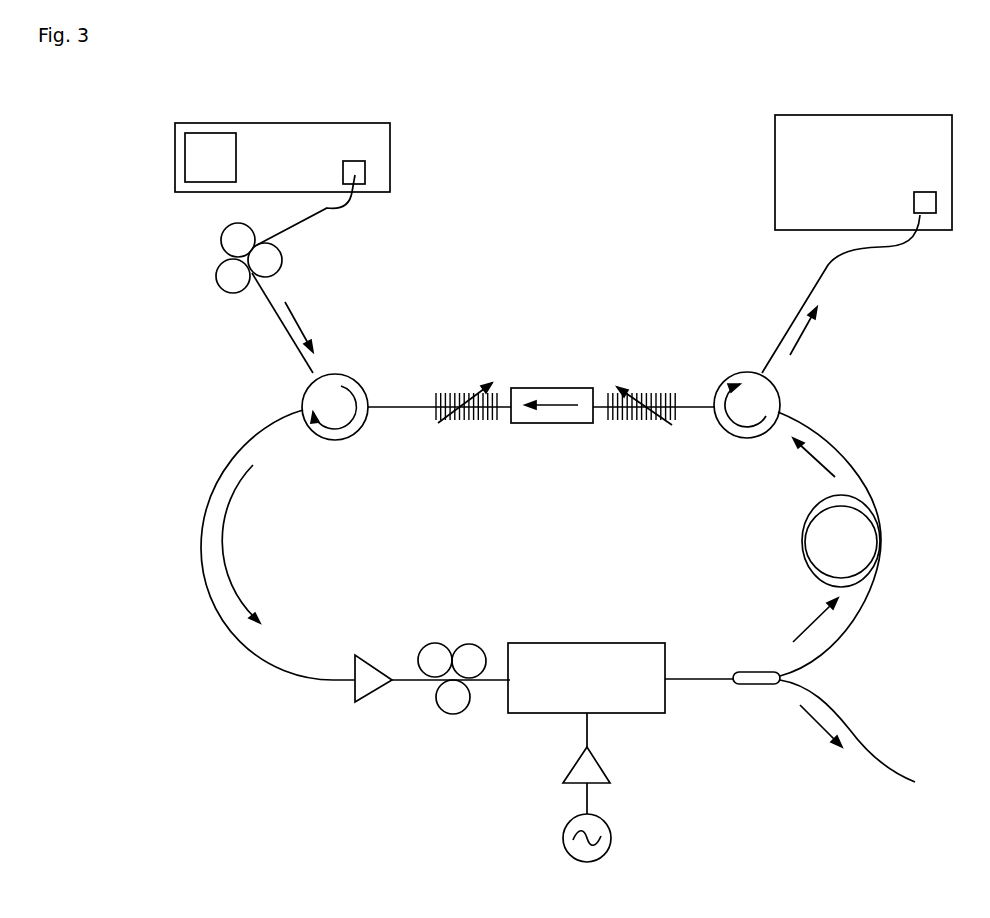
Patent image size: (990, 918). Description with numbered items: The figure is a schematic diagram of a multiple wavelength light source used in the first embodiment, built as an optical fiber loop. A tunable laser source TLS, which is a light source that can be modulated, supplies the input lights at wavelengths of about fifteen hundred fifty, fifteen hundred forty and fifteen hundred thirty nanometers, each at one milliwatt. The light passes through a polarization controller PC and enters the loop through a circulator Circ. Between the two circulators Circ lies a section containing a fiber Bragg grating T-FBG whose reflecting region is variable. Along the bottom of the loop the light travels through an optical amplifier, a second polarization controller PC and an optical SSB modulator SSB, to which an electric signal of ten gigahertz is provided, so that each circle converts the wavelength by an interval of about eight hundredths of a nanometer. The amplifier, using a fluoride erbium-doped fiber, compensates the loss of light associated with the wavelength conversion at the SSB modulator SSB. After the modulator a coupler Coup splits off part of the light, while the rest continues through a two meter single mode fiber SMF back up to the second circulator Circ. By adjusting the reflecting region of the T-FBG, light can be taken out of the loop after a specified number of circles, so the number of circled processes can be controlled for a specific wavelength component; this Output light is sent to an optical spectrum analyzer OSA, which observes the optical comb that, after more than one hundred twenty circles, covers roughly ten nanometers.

The tunable laser source TLS is at (282, 144).
The polarization controller PC is at (339, 485).
The circulator Circ is at (541, 419).
The fiber bragg grating with variable reflecting region T-FBG is at (555, 389).
The optical spectrum analyzer OSA is at (863, 159).
The output Output is at (841, 294).
The SSB modulator SSB is at (586, 663).
The coupler Coup is at (754, 693).
The single mode fiber SMF is at (867, 541).